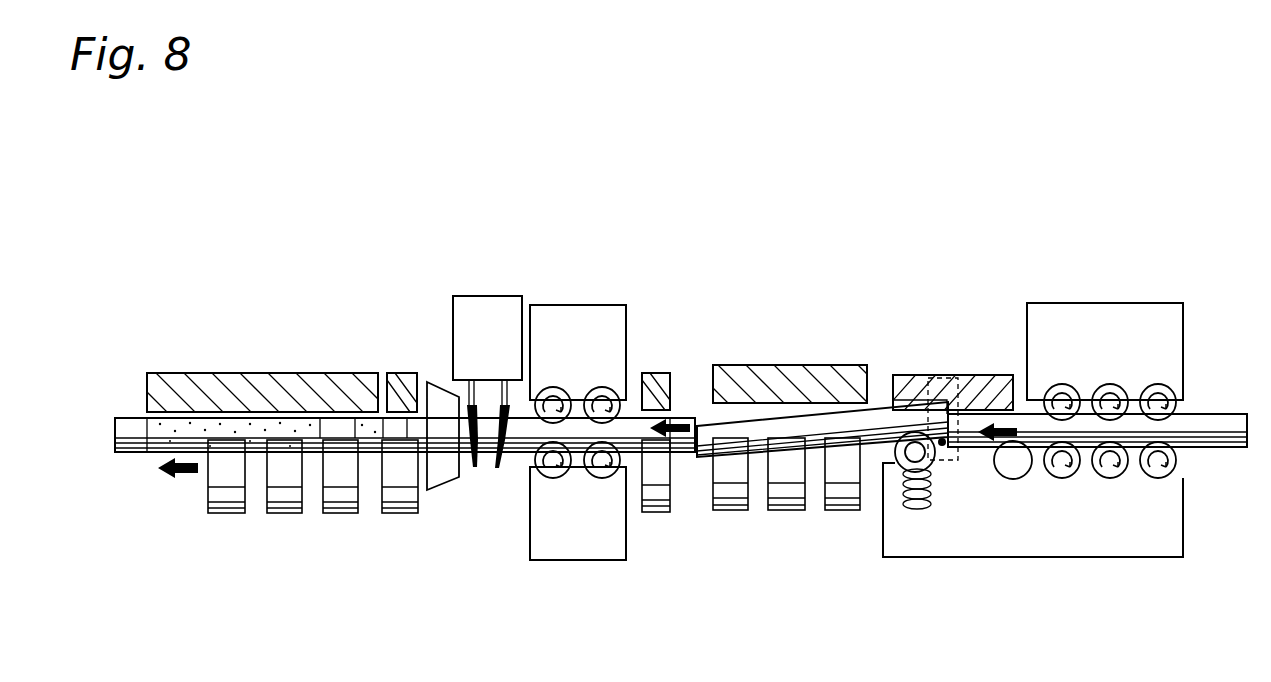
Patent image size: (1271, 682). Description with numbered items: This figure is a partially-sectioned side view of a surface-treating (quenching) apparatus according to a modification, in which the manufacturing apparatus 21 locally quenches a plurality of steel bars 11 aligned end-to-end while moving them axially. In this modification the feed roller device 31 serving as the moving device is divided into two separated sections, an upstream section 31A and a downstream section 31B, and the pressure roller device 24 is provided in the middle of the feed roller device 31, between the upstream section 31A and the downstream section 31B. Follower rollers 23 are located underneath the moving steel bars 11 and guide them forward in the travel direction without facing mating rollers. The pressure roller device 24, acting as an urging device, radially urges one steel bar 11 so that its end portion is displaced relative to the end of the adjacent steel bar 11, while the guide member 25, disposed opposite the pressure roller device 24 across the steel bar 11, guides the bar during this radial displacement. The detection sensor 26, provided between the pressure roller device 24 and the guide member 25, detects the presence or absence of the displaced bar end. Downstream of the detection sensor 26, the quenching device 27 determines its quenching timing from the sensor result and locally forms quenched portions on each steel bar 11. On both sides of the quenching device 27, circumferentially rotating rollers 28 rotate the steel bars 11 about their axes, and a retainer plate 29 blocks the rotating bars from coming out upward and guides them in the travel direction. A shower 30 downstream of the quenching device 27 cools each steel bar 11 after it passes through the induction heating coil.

The steel bar 11 is at (327, 425).
The manufacturing apparatus 21 is at (413, 303).
The follower roller 23 is at (1013, 465).
The pressure roller device 24 is at (897, 495).
The guide member 25 is at (980, 375).
The detection sensor 26 is at (935, 390).
The quenching device 27 is at (470, 318).
The circumferentially rotating rollers 28 is at (340, 493).
The retainer plate 29 is at (228, 372).
The shower 30 is at (440, 465).
The feed roller device 31 is at (605, 325).
The upstream section 31A is at (1090, 318).
The downstream section 31B is at (555, 328).